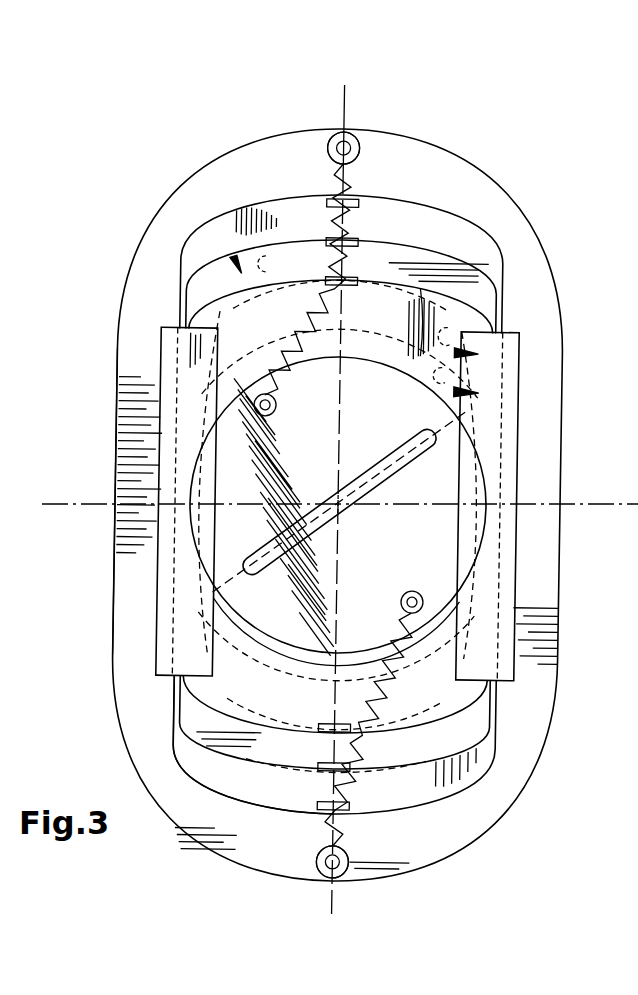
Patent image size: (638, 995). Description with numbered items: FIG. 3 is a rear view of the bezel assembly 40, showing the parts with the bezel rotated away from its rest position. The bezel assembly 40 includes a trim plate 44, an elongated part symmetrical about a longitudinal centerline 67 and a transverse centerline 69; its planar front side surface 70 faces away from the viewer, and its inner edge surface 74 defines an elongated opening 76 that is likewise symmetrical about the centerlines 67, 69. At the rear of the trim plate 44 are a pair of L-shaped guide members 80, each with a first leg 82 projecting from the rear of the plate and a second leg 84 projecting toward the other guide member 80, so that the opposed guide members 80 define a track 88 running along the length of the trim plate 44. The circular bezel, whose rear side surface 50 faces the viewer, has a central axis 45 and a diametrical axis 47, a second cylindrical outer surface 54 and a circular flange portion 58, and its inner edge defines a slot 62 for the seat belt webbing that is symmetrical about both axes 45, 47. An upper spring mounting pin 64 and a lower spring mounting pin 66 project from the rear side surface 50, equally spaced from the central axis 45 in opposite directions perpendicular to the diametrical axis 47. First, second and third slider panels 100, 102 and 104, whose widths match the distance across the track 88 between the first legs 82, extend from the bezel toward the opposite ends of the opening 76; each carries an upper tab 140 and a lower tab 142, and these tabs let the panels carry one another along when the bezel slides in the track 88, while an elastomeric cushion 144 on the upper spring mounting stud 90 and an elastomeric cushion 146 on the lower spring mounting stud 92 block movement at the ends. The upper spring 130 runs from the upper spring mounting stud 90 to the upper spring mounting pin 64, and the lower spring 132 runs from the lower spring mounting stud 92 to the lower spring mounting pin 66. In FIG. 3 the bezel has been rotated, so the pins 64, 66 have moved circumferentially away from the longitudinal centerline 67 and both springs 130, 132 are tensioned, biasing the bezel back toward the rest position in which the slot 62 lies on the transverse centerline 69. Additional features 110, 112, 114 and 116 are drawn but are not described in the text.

The bezel assembly 40 is at (78, 187).
The trim plate 44 is at (115, 302).
The front side surface 70 is at (222, 187).
The inner edge surface 74 is at (228, 262).
The opening 76 is at (226, 266).
The upper spring 130 is at (335, 188).
The longitudinal centerline 67 is at (349, 120).
The elastomeric cushion 144 is at (360, 142).
The upper spring mounting stud 90 is at (361, 151).
The upper tab 140 is at (313, 278).
The third slider panel 104 is at (433, 196).
The second slider panel 102 is at (444, 242).
The first slider panel 100 is at (471, 296).
The catch 114 is at (466, 330).
The catch arrow 116 is at (467, 348).
The catch 110 is at (466, 388).
The catch arrow 112 is at (466, 392).
The second cylindrical outer surface 54 is at (252, 383).
The circular flange portion 58 is at (358, 380).
The upper spring mounting pin 64 is at (276, 406).
The diametrical axis 47 is at (382, 470).
The central axis 45 is at (331, 498).
The slot 62 is at (328, 543).
The lower spring mounting pin 66 is at (417, 589).
The transverse centerline 69 is at (74, 503).
The guide members 80 is at (146, 552).
The first leg 82 is at (170, 628).
The second leg 84 is at (200, 652).
The rear side surface 50 is at (293, 637).
The track 88 is at (186, 690).
The lower spring mounting stud 92 is at (318, 859).
The elastomeric cushion 146 is at (327, 878).
The lower tab 142 is at (350, 727).
The lower spring 132 is at (352, 840).